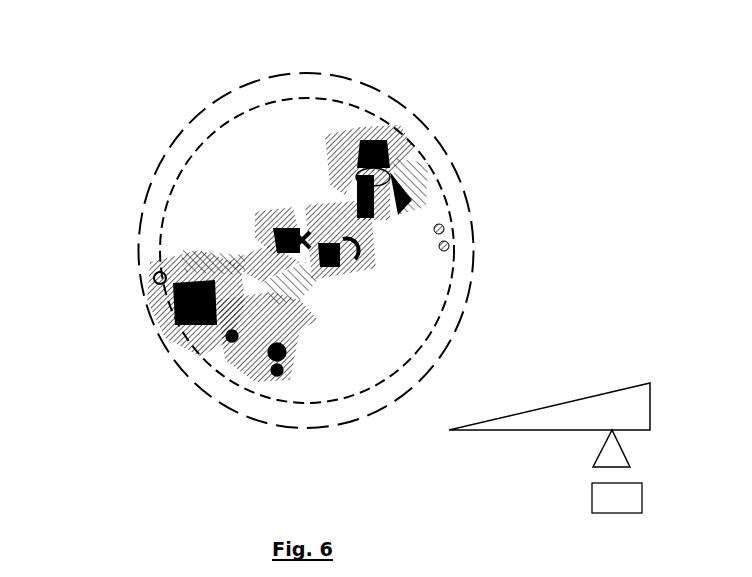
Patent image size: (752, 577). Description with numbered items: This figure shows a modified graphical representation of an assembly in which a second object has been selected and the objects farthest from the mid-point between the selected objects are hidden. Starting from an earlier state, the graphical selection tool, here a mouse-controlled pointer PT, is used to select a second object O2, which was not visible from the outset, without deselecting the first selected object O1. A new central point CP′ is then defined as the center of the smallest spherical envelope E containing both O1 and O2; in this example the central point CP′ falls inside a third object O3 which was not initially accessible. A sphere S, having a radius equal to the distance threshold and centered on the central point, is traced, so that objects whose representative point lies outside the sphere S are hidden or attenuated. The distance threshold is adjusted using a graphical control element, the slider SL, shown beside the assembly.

The spherical envelope E is at (193, 157).
The first selected object O1 is at (183, 277).
The second object O2 is at (403, 173).
The third object O3 is at (302, 230).
The new central point CP′ is at (300, 230).
The graphical selection tool (pointer) PT is at (400, 211).
The slider SL is at (606, 390).
The sphere S is at (198, 392).